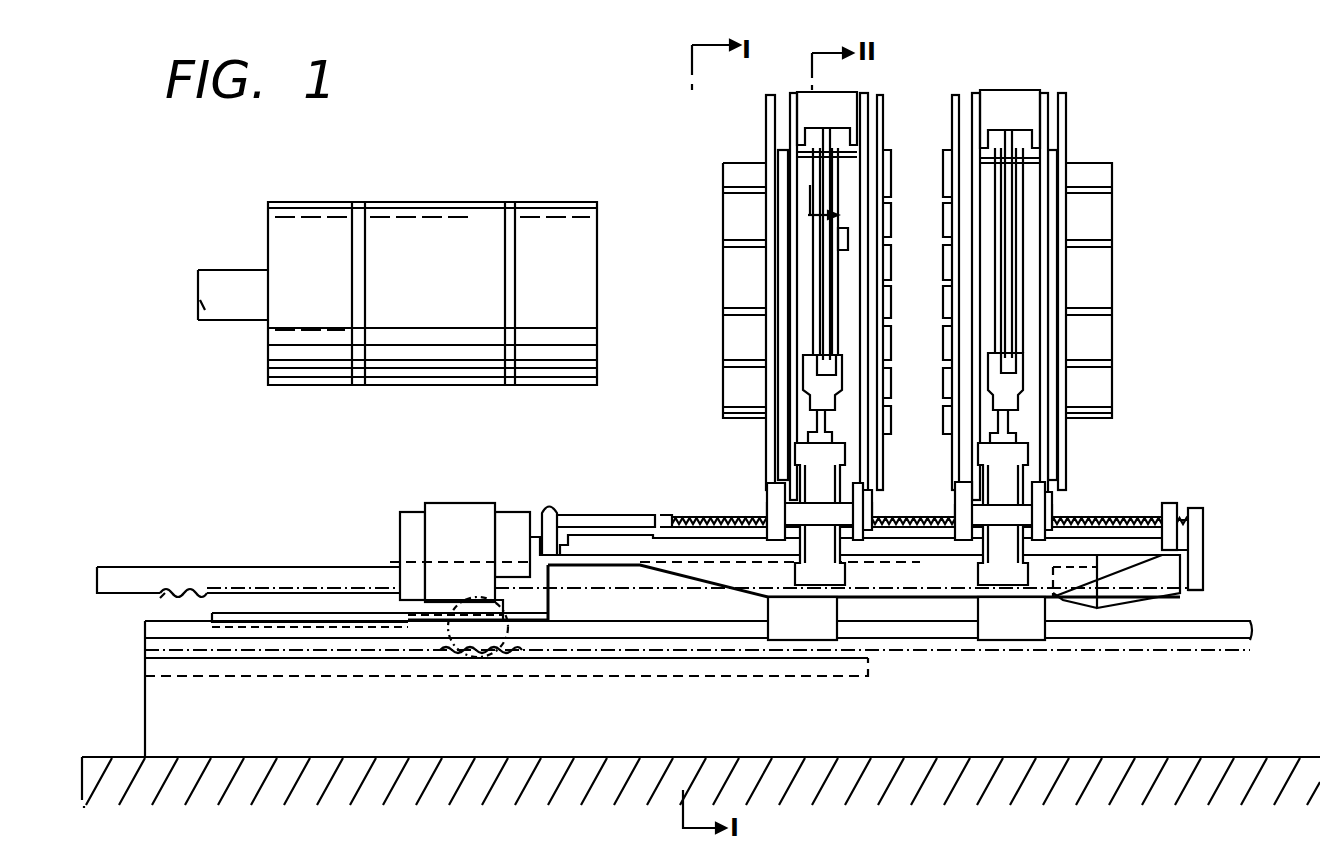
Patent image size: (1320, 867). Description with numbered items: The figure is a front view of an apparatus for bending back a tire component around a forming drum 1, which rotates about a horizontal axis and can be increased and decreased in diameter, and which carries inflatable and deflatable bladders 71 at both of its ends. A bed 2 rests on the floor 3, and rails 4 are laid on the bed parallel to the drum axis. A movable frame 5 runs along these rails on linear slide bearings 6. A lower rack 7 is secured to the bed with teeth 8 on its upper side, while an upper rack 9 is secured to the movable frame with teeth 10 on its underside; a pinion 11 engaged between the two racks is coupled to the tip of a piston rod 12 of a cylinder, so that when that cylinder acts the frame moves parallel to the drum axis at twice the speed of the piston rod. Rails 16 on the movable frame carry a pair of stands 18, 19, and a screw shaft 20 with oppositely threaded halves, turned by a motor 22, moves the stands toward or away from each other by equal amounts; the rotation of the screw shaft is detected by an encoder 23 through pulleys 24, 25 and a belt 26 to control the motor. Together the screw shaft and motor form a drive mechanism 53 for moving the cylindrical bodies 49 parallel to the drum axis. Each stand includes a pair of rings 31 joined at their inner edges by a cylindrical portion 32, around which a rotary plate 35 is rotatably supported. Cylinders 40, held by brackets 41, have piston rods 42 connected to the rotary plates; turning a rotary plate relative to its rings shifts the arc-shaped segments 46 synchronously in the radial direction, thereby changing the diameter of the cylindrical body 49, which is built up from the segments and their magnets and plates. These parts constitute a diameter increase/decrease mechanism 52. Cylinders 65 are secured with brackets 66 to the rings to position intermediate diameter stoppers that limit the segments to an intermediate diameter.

The forming drum 1 is at (397, 258).
The bed 2 is at (1244, 700).
The floor 3 is at (1258, 765).
The rails 4 is at (1245, 625).
The movable frame 5 is at (950, 590).
The linear slide bearings 6 is at (768, 612).
The lower rack 7 is at (645, 674).
The teeth 8 is at (530, 643).
The upper rack 9 is at (318, 572).
The teeth 10 is at (178, 592).
The pinion 11 is at (462, 650).
The piston rod 12 is at (340, 612).
The rails 16 is at (662, 515).
The stand 18 is at (782, 115).
The stand 19 is at (1052, 142).
The screw shaft 20 is at (730, 515).
The motor 22 is at (461, 503).
The encoder 23 is at (1150, 593).
The pulley 24 is at (1205, 520).
The pulley 25 is at (1205, 592).
The belt 26 is at (1204, 556).
The rings 31 is at (792, 94).
The cylindrical portion 32 is at (985, 188).
The rotary plate 35 is at (828, 292).
The cylinders 40 is at (842, 468).
The brackets 41 is at (868, 500).
The piston rods 42 is at (835, 440).
The arc-shaped segments 46 is at (783, 167).
The cylindrical bodies 49 is at (712, 283).
The diameter increase/decrease mechanism 52 is at (963, 497).
The drive mechanism 53 is at (580, 500).
The cylinders 65 is at (832, 96).
The brackets 66 is at (882, 118).
The bladders 71 is at (335, 206).